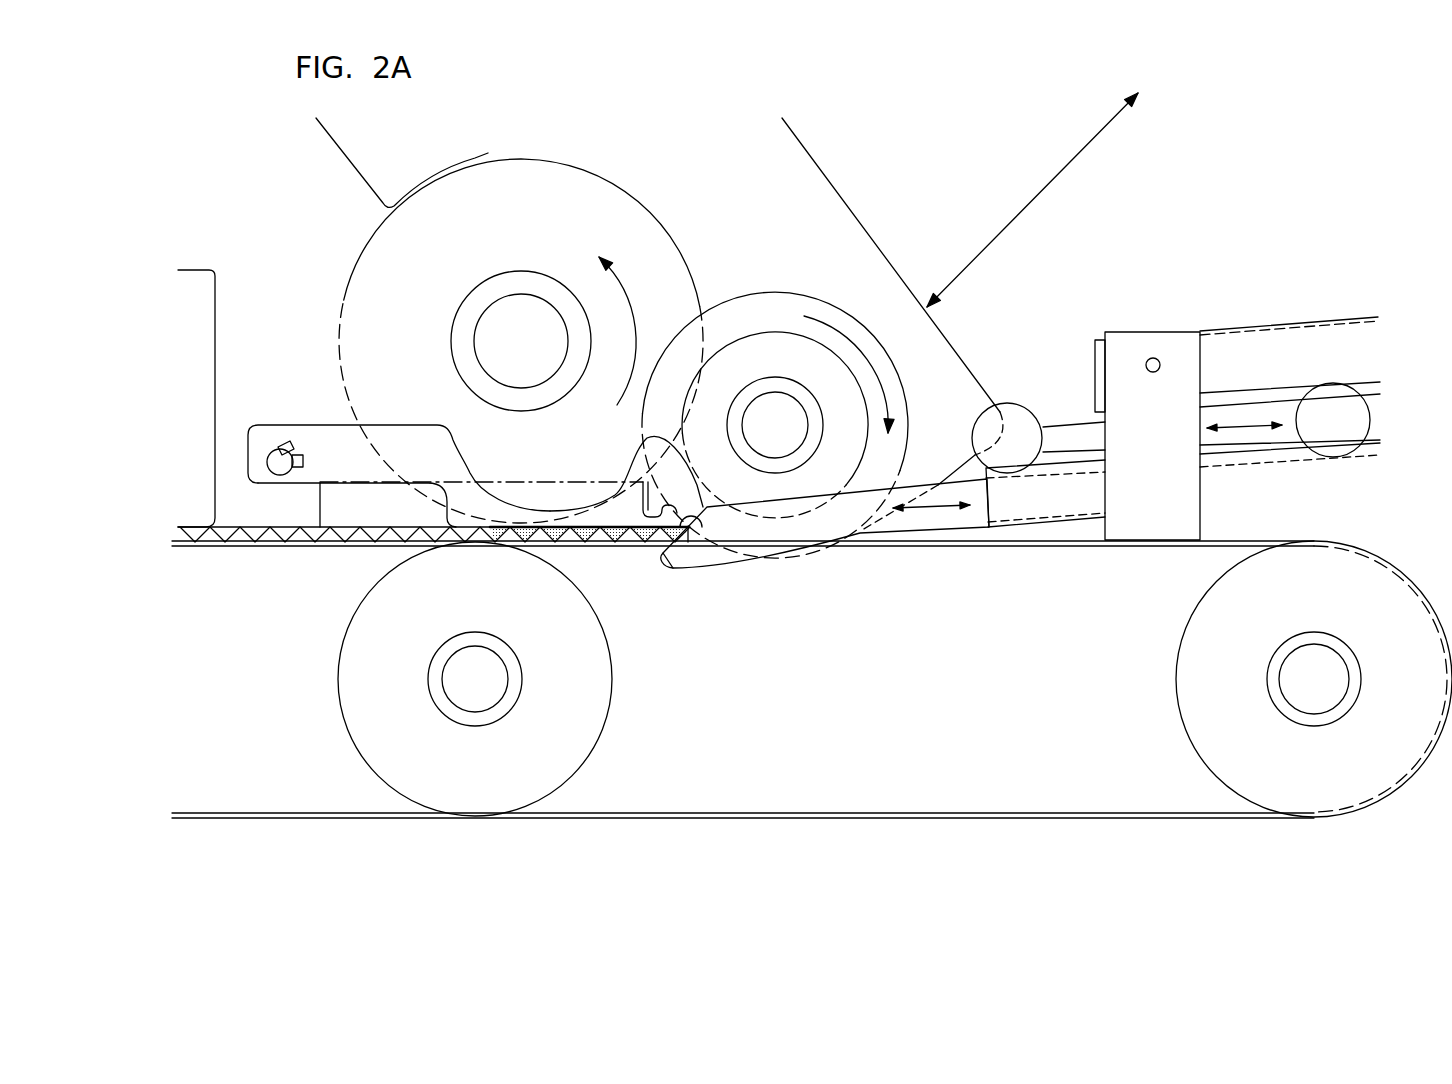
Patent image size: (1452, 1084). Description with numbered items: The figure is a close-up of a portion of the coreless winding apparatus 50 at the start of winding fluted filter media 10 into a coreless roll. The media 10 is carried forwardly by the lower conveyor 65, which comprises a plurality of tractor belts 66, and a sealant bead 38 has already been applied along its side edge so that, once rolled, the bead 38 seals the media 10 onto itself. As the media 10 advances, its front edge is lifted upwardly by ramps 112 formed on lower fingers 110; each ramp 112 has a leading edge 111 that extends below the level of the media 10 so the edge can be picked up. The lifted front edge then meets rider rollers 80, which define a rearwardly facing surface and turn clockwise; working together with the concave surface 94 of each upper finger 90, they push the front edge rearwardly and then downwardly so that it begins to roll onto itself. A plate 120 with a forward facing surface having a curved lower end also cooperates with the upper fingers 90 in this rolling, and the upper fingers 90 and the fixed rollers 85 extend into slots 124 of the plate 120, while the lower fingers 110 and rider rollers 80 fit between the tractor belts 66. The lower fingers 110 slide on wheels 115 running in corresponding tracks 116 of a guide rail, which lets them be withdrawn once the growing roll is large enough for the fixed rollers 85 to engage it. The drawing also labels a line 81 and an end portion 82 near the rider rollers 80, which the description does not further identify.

The fluted filter media 10 is at (342, 547).
The sealant bead 38 is at (493, 543).
The coreless winding apparatus 50 is at (1152, 213).
The lower conveyor 65 is at (830, 820).
The tractor belts 66 is at (958, 818).
The rider rollers 80 is at (846, 302).
The tape web 81 is at (818, 168).
The tape leading end 82 is at (668, 522).
The fixed rollers 85 is at (579, 162).
The upper fingers 90 is at (396, 417).
The concave surface 94 is at (642, 516).
The lower fingers 110 is at (866, 539).
The leading edge 111 is at (663, 553).
The ramps 112 is at (647, 481).
The wheels 115 is at (1300, 388).
The tracks 116 is at (1272, 455).
The plate 120 is at (489, 472).
The slots 124 is at (348, 508).